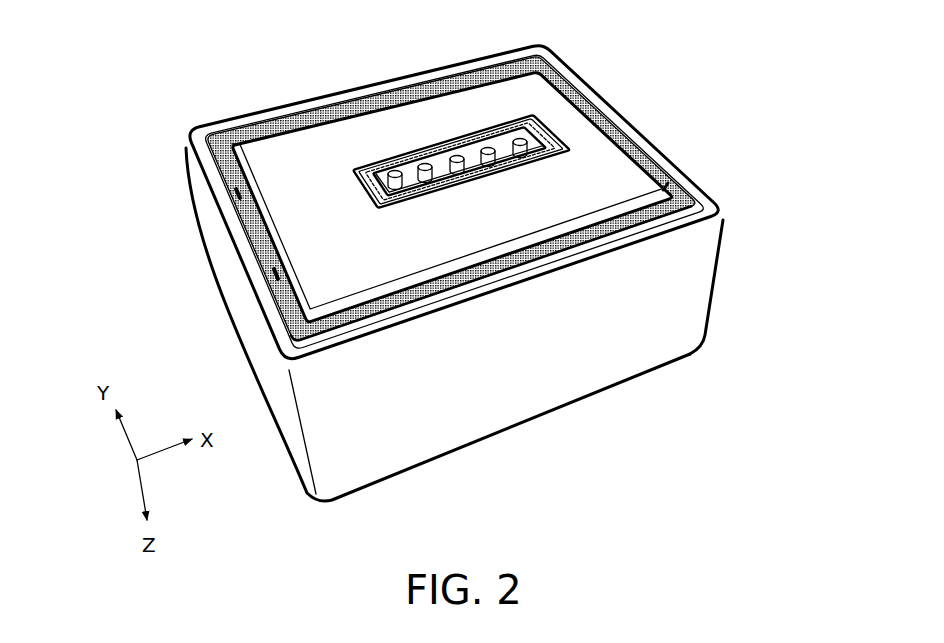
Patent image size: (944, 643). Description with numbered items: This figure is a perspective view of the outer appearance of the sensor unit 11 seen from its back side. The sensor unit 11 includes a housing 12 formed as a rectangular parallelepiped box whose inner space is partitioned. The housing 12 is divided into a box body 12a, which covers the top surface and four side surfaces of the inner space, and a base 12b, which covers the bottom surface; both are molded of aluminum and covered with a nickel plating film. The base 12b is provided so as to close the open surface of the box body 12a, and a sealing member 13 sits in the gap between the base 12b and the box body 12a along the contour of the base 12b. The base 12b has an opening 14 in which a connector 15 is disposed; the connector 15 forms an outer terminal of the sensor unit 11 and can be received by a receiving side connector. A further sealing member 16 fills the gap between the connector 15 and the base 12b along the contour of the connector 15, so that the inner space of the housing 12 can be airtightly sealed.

The sensor unit 11 is at (646, 80).
The housing 12 is at (717, 324).
The box body 12a is at (713, 261).
The base 12b is at (612, 150).
The sealing member 13 is at (679, 167).
The opening 14 is at (366, 188).
The connector 15 is at (437, 146).
The sealing member 16 is at (509, 124).